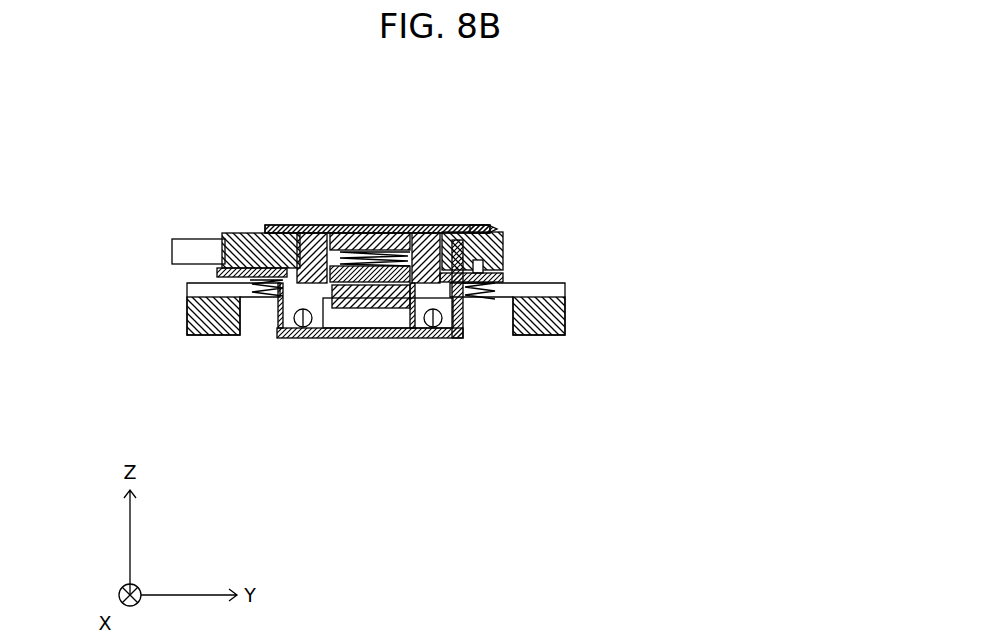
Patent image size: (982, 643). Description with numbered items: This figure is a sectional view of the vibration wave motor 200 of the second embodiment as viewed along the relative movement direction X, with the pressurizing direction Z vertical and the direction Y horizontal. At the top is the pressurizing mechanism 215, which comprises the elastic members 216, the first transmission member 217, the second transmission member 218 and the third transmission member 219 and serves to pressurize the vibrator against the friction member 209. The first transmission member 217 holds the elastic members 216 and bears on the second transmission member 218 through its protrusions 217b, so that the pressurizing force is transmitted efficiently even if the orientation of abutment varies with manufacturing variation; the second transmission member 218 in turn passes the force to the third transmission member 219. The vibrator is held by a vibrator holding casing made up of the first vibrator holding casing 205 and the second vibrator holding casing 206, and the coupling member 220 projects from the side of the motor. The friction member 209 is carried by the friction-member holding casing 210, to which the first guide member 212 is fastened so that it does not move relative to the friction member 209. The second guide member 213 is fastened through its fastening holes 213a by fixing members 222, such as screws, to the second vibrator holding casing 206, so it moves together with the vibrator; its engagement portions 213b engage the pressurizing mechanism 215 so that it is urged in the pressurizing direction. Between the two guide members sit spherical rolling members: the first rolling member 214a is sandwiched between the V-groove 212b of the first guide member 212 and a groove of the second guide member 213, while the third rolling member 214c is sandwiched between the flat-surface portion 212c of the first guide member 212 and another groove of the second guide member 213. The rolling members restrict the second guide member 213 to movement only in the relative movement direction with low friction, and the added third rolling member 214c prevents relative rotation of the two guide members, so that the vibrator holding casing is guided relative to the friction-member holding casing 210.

The vibration wave motor 200 is at (92, 147).
The pressurizing mechanism 215 is at (182, 137).
The elastic members 216 is at (260, 230).
The first transmission member 217 is at (306, 226).
The protrusions 217b is at (433, 250).
The second transmission member 218 is at (352, 255).
The third transmission member 219 is at (390, 253).
The first vibrator holding casing 205 is at (474, 236).
The second vibrator holding casing 206 is at (492, 228).
The fixing members 222 is at (484, 265).
The fastening holes 213a is at (504, 273).
The coupling member 220 is at (172, 250).
The friction-member holding casing 210 is at (567, 307).
The friction member 209 is at (330, 288).
The first guide member 212 is at (337, 338).
The flat-surface portion 212c is at (292, 336).
The V-groove 212b is at (430, 338).
The third rolling member 214c is at (301, 340).
The first rolling member 214a is at (437, 337).
The second guide member 213 is at (460, 340).
The engagement portions 213b is at (480, 300).